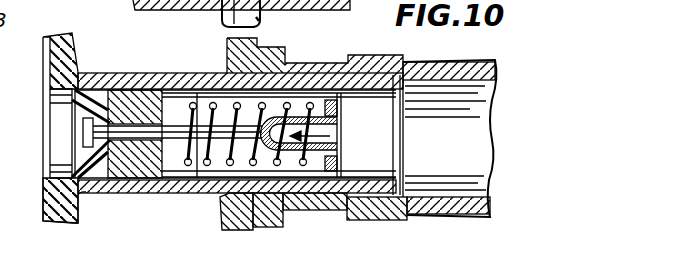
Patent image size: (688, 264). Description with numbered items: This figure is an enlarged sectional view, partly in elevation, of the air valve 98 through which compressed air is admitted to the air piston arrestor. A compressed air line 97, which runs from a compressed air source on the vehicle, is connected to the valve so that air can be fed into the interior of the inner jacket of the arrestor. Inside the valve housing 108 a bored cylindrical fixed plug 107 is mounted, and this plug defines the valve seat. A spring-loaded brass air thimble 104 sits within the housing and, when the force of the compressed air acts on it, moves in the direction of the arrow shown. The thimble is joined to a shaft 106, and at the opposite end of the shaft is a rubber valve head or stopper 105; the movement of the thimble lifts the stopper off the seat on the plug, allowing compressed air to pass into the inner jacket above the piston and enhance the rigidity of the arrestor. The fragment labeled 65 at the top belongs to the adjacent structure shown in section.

The mounting plate 65 is at (186, 11).
The compressed air line 97 is at (478, 63).
The air valve 98 is at (158, 209).
The spring-loaded brass air thimble 104 is at (342, 122).
The rubber valve head or stopper 105 is at (68, 107).
The shaft 106 is at (196, 94).
The bored cylindrical fixed plug 107 is at (128, 86).
The valve housing 108 is at (177, 82).